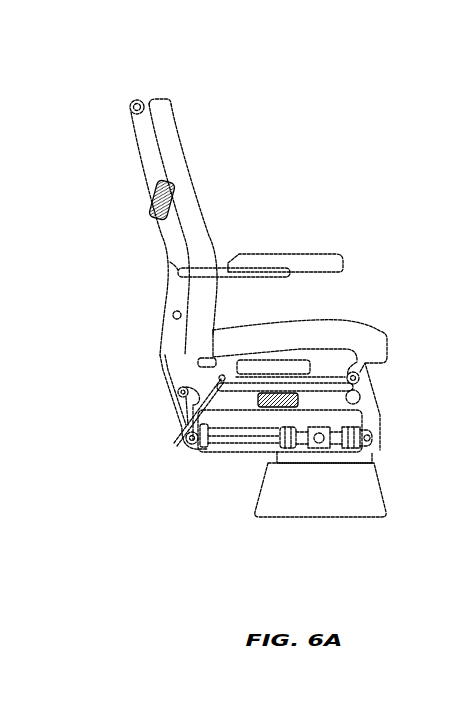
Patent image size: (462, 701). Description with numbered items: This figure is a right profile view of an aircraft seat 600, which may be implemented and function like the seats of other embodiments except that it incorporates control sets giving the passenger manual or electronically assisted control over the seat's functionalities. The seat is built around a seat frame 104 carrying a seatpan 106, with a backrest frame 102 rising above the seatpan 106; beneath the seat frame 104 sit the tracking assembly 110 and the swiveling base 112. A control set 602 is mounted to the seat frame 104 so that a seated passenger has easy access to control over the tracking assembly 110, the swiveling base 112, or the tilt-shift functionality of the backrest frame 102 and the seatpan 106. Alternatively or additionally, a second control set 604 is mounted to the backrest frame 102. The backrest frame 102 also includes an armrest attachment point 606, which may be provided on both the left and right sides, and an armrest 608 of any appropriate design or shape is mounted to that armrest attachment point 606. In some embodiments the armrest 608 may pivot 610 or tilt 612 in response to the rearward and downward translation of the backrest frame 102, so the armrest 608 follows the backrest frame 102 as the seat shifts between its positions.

The aircraft seat 600 is at (110, 67).
The backrest frame 102 is at (148, 152).
The control set 604 is at (157, 208).
The armrest attachment point 606 is at (180, 277).
The armrest 608 is at (300, 262).
The pivot 610 is at (366, 277).
The tilt 612 is at (317, 303).
The seatpan 106 is at (220, 366).
The control set 602 is at (283, 406).
The seat frame 104 is at (368, 408).
The tracking assembly 110 is at (370, 438).
The swiveling base 112 is at (283, 495).